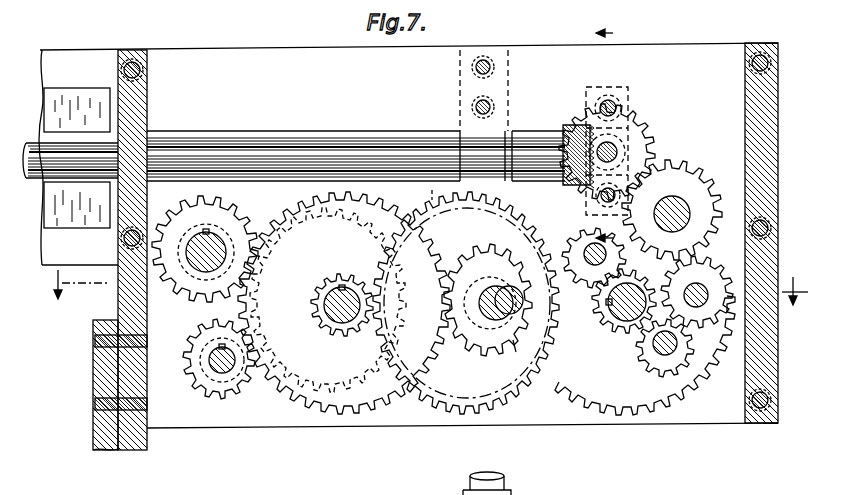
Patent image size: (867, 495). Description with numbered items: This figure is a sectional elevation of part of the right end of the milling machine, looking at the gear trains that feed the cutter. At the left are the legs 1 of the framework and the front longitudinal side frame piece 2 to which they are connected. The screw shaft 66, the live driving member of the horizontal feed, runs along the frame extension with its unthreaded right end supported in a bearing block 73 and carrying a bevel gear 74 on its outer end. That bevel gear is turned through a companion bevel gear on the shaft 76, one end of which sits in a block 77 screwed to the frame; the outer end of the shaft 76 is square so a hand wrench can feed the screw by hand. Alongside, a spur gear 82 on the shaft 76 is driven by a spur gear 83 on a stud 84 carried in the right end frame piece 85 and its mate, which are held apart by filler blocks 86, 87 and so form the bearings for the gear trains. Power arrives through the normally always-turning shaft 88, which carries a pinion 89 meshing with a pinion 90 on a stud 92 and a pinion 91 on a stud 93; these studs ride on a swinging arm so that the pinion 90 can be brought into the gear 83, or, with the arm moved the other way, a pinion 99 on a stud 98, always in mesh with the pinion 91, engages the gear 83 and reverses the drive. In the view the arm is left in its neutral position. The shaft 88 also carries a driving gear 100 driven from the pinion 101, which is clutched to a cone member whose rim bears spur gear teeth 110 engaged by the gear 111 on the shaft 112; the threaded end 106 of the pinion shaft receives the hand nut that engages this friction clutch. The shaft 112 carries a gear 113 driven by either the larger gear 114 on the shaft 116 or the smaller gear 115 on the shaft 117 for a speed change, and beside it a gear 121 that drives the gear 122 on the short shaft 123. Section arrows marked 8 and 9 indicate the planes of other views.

The legs 1 is at (105, 437).
The longitudinal side frame piece 2 is at (78, 55).
The section line 8- 8 is at (421, 285).
The section line 9- 9 is at (612, 143).
The screw shaft 66 is at (258, 150).
The bearing block 73 is at (493, 148).
The bevel gear 74 is at (573, 120).
The shaft 76 is at (617, 152).
The block 77 is at (618, 92).
The spur gear 82 is at (645, 122).
The spur gear 83 is at (688, 190).
The stud 84 is at (690, 215).
The right end frame piece 85 is at (403, 412).
The filler block 86 is at (760, 358).
The filler block 87 is at (125, 300).
The shaft 88 is at (623, 323).
The pinion 89 is at (638, 285).
The pinion 90 is at (570, 208).
The pinion 91 is at (677, 357).
The stud 92 is at (598, 268).
The stud 93 is at (677, 347).
The stud 98 is at (703, 285).
The pinion 99 is at (706, 300).
The driving gear 100 is at (670, 405).
The pinion 101 is at (480, 345).
The screw threaded outer end 106 is at (505, 480).
The spur gear teeth 110 is at (432, 195).
The gear 111 is at (344, 272).
The shaft 112 is at (336, 322).
The gear 113 is at (320, 238).
The gear 114 is at (240, 213).
The gear 115 is at (226, 400).
The shaft 116 is at (205, 272).
The shaft 117 is at (218, 376).
The gear 121 is at (358, 413).
The gear 122 is at (513, 347).
The short shaft 123 is at (497, 285).